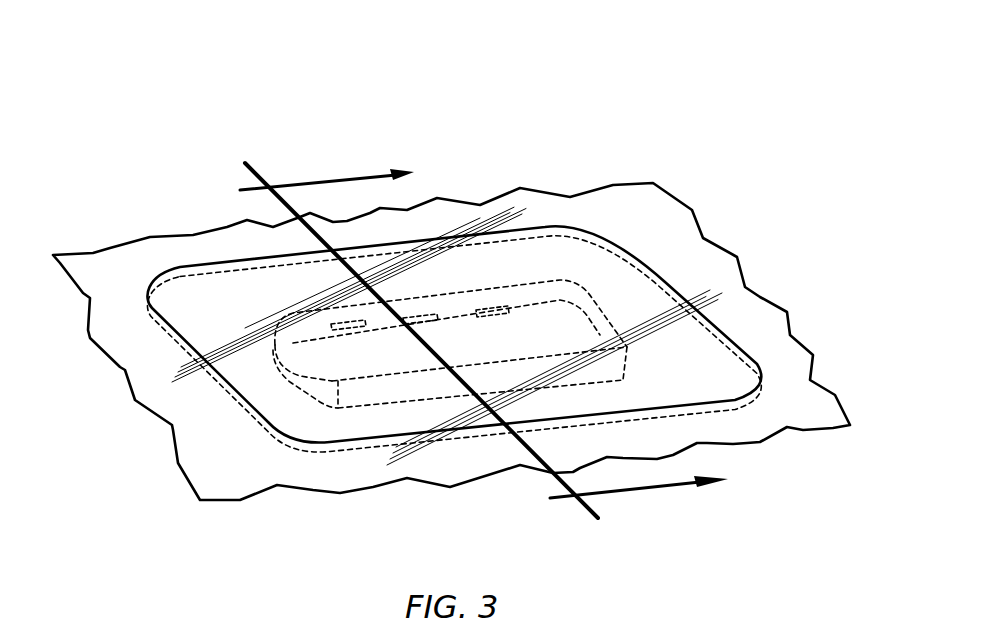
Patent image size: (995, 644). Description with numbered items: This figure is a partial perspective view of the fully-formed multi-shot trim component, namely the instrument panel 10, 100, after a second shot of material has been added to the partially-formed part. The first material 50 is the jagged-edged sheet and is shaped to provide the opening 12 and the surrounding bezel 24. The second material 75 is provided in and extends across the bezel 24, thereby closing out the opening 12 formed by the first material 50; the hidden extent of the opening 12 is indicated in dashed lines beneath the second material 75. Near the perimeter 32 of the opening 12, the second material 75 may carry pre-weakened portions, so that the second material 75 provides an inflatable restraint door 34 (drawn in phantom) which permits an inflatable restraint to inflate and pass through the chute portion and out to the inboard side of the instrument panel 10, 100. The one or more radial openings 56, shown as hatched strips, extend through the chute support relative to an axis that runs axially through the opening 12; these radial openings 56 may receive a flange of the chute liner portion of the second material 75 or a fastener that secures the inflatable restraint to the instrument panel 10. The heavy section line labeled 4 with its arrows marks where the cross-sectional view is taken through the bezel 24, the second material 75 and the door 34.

The instrument panel 10 is at (451, 285).
The instrument panel 100 is at (198, 84).
The first material 50 is at (674, 245).
The second material 75 is at (596, 260).
The bezel 24 is at (693, 375).
The opening 12 is at (455, 338).
The perimeter 32 is at (527, 303).
The inflatable restraint door 34 is at (381, 368).
The radial openings 56 is at (325, 327).
The section line 4- 4 is at (479, 343).